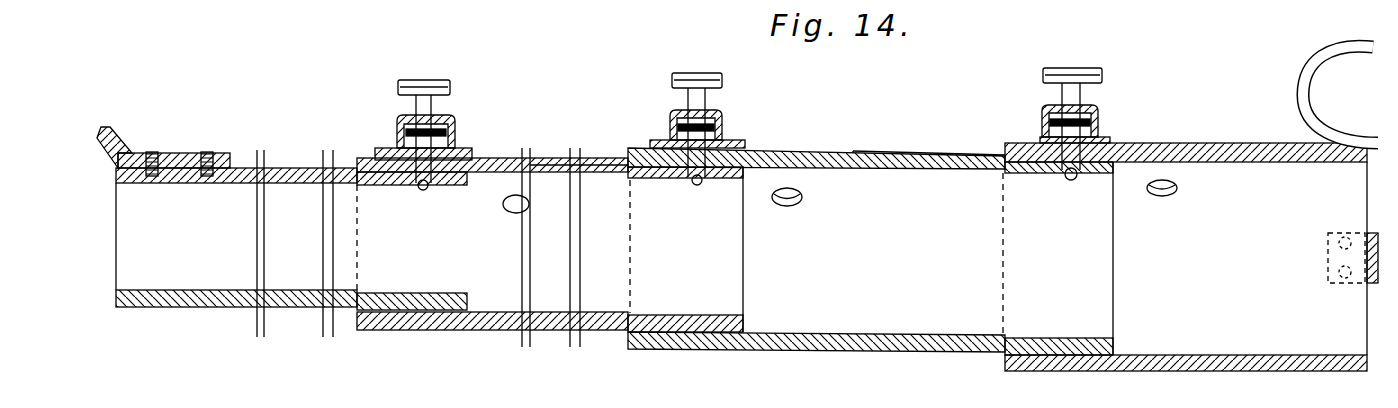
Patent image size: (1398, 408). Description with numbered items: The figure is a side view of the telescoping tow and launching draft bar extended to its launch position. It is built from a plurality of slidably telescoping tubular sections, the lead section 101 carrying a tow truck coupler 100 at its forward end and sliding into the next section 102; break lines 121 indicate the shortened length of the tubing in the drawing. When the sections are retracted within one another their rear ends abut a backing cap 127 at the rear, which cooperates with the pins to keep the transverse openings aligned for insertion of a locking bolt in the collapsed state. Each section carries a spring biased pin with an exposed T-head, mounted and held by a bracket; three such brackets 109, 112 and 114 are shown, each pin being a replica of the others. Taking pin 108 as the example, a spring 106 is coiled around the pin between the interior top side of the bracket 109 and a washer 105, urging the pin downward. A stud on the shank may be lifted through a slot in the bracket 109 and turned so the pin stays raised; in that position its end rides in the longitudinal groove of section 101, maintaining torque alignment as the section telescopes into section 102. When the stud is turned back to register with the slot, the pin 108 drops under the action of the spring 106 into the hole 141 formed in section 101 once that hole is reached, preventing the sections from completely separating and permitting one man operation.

The tow truck coupler 100 is at (104, 134).
The lead section 101 is at (233, 167).
The tube wall / break region 121 is at (305, 168).
The telescoping section 102 is at (512, 165).
The washer 105 is at (452, 150).
The spring 106 is at (452, 126).
The spring biased pin 108 is at (436, 99).
The bracket 109 is at (399, 126).
The hole 141 is at (426, 190).
The bracket 112 is at (722, 132).
The bracket 114 is at (1100, 120).
The backing cap 127 is at (1360, 284).